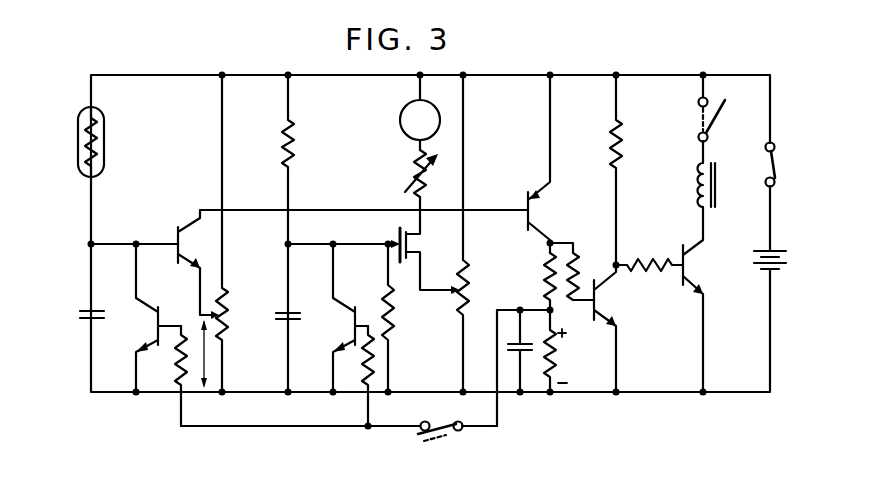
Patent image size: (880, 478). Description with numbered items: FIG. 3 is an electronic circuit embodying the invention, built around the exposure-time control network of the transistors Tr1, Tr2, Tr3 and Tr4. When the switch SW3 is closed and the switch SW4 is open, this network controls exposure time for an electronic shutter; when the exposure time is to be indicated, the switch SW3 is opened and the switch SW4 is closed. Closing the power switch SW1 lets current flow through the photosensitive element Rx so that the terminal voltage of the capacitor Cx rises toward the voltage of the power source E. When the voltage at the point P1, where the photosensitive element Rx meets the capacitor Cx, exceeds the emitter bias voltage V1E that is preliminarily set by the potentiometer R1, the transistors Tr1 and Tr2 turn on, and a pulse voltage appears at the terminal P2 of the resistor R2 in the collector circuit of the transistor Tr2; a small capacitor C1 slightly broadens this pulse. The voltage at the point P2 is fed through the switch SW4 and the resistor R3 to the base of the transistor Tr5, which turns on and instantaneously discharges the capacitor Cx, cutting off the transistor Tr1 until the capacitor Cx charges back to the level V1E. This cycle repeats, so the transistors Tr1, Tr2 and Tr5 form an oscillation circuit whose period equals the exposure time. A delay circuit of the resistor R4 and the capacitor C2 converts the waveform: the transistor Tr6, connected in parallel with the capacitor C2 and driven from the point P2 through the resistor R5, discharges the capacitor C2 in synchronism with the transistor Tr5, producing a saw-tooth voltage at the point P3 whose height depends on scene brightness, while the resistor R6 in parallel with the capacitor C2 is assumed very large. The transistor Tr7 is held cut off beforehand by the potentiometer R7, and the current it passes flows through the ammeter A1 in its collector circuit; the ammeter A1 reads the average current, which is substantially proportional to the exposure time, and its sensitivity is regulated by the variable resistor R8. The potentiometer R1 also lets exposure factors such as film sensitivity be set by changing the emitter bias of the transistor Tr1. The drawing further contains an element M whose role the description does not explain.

The photosensitive element Rx is at (105, 133).
The point of contact P1 is at (114, 236).
The capacitor Cx is at (80, 311).
The transistor Tr5 is at (153, 320).
The resistor R3 is at (181, 352).
The transistor Tr1 is at (180, 243).
The potentiometer R1 is at (228, 320).
The emitter bias voltage V1E is at (220, 354).
The resistor R4 is at (294, 152).
The point of contact P3 is at (311, 236).
The capacitor C2 is at (300, 318).
The transistor Tr6 is at (350, 320).
The resistor R5 is at (370, 352).
The resistor R6 is at (394, 324).
The transistor Tr7 is at (409, 246).
The ammeter A1 is at (400, 112).
The variable resistor R8 is at (412, 180).
The potentiometer R7 is at (470, 284).
The transistor Tr2 is at (531, 212).
The terminal of resistor R2 P2 is at (550, 310).
The capacitor C1 is at (540, 338).
The resistor R2 is at (570, 366).
The transistor Tr3 is at (596, 300).
The transistor Tr4 is at (686, 264).
The relay coil M is at (716, 197).
The switch SW3 is at (712, 112).
The power switch SW1 is at (775, 176).
The power source E is at (780, 252).
The switch SW4 is at (436, 437).